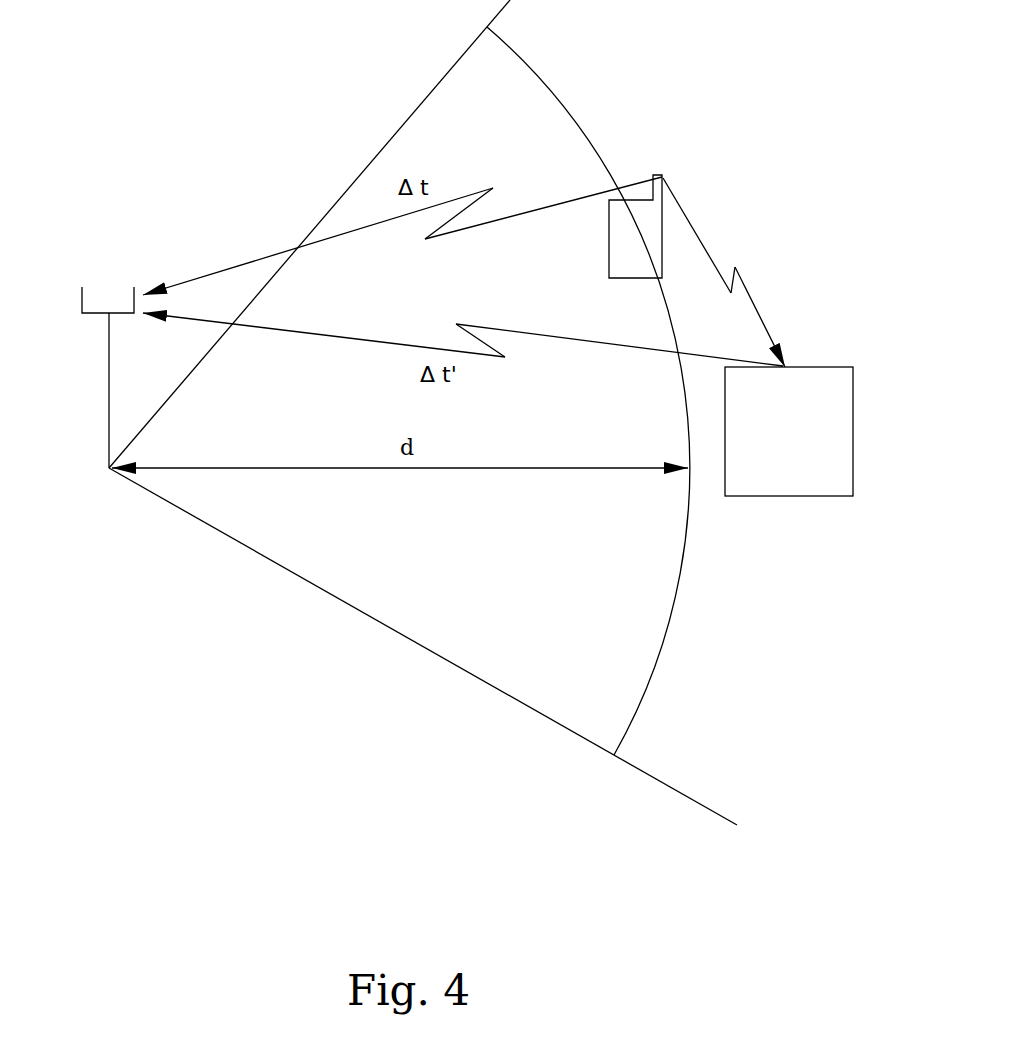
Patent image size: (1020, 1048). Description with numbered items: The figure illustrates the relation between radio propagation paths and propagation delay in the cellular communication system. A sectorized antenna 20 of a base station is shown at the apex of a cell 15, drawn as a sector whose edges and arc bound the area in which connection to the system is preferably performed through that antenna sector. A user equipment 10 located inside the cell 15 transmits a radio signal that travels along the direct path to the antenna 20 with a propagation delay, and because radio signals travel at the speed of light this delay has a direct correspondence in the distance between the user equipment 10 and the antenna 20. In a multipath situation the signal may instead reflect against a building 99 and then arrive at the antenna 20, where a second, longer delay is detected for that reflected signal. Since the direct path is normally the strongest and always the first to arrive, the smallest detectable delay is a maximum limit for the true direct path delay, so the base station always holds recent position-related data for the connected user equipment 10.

The user equipment 10 is at (664, 178).
The cell 15 is at (438, 107).
The antenna 20 is at (107, 404).
The building 99 is at (787, 487).